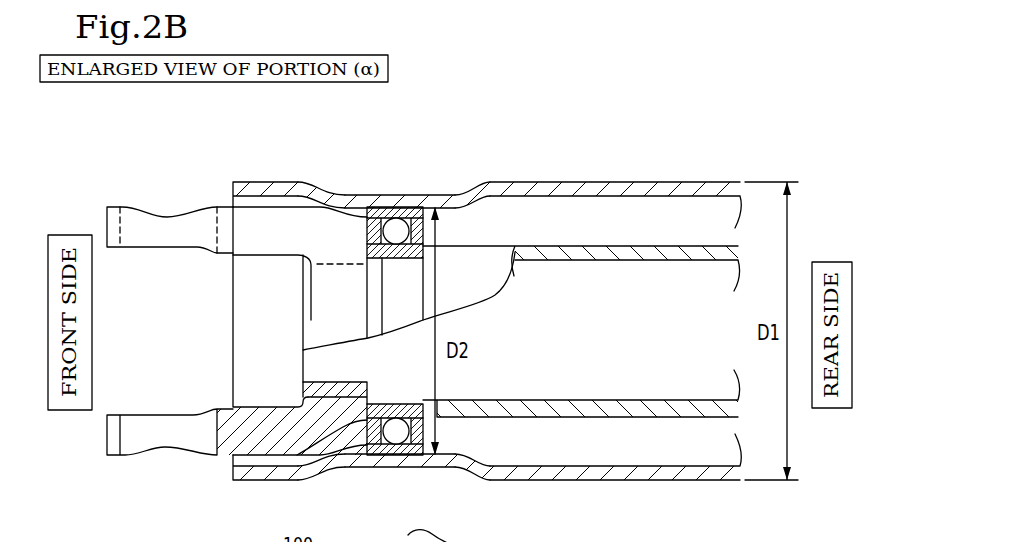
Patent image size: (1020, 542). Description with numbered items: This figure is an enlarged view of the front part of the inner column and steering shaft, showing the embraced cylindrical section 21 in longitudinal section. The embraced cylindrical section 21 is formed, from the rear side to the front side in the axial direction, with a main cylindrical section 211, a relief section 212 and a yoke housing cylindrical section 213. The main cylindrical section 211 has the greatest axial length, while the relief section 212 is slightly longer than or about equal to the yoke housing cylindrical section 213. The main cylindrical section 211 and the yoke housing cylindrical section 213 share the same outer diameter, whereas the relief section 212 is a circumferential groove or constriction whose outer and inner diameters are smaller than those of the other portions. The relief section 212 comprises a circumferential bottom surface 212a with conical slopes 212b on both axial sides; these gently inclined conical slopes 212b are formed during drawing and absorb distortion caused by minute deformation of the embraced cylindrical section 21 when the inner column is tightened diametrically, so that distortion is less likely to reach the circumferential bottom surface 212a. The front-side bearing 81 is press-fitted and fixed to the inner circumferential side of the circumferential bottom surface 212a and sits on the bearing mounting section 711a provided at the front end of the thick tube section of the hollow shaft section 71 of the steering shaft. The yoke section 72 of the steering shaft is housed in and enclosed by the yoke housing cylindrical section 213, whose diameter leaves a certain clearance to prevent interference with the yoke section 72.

The embraced cylindrical section 21 is at (485, 270).
The main cylindrical section 211 is at (609, 298).
The relief section 212 is at (396, 291).
The circumferential bottom surface 212a is at (377, 190).
The conical slopes 212b is at (327, 182).
The yoke housing cylindrical section 213 is at (318, 158).
The shaft section 71 is at (618, 413).
The bearing mounting section 711a is at (402, 248).
The yoke section 72 is at (184, 432).
The front-side bearing 81 is at (375, 240).